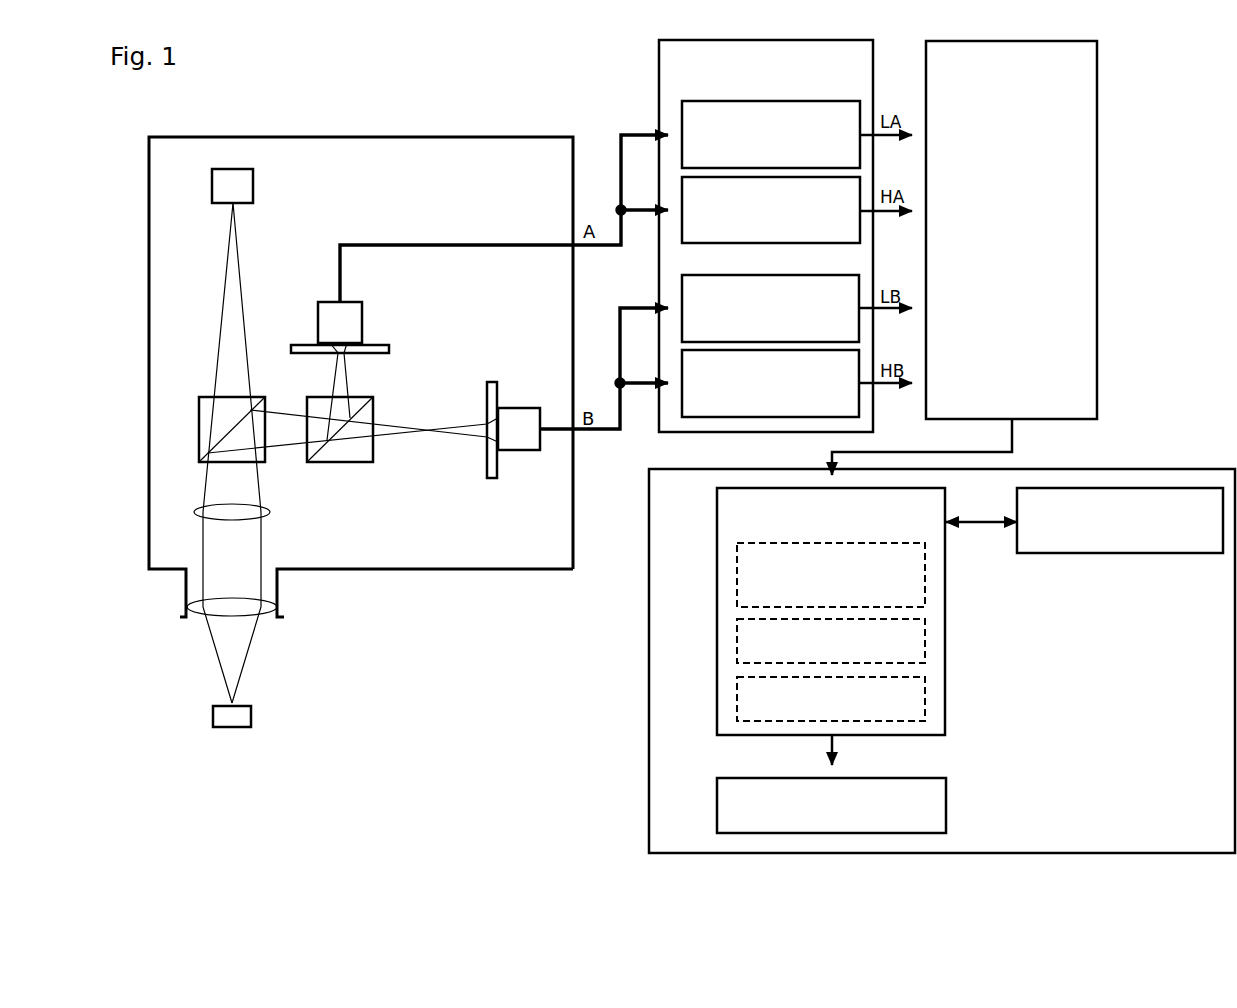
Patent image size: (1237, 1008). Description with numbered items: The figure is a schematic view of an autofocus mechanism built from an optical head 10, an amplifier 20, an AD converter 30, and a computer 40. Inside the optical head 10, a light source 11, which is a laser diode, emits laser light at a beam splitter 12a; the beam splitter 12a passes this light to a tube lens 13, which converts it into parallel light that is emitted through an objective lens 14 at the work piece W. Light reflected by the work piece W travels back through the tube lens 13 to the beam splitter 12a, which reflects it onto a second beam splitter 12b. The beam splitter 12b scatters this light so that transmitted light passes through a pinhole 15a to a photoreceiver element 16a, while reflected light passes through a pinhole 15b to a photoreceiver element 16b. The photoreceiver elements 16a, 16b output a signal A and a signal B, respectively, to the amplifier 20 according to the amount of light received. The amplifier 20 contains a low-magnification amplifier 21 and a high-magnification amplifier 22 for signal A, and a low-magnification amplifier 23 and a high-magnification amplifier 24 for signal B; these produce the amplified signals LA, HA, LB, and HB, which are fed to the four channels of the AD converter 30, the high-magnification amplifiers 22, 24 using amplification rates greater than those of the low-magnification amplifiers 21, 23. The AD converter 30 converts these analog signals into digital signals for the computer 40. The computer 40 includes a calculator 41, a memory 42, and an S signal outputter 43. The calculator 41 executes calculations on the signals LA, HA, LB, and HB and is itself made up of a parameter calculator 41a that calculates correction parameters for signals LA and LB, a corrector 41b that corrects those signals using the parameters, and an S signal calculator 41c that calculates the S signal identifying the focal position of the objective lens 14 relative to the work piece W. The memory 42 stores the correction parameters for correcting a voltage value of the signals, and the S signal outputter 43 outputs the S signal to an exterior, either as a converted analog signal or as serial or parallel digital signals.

The optical head 10 is at (150, 308).
The light source 11 is at (254, 186).
The beam splitter 12a is at (200, 397).
The beam splitter 12b is at (343, 462).
The tube lens 13 is at (270, 512).
The objective lens 14 is at (281, 610).
The pinhole 15a is at (492, 478).
The pinhole 15b is at (389, 350).
The photoreceiver element 16a is at (520, 452).
The photoreceiver element 16b is at (362, 313).
The work piece W is at (213, 718).
The amplifier 20 is at (659, 65).
The low-magnification amplifier 21 is at (682, 115).
The high-magnification amplifier 22 is at (682, 192).
The low-magnification amplifier 23 is at (682, 291).
The high-magnification amplifier 24 is at (682, 366).
The AD converter 30 is at (1097, 232).
The computer 40 is at (649, 663).
The calculator 41 is at (945, 628).
The parameter calculator 41a is at (737, 577).
The corrector 41b is at (737, 643).
The S signal calculator 41c is at (737, 701).
The memory 42 is at (1110, 553).
The S signal outputter 43 is at (717, 805).